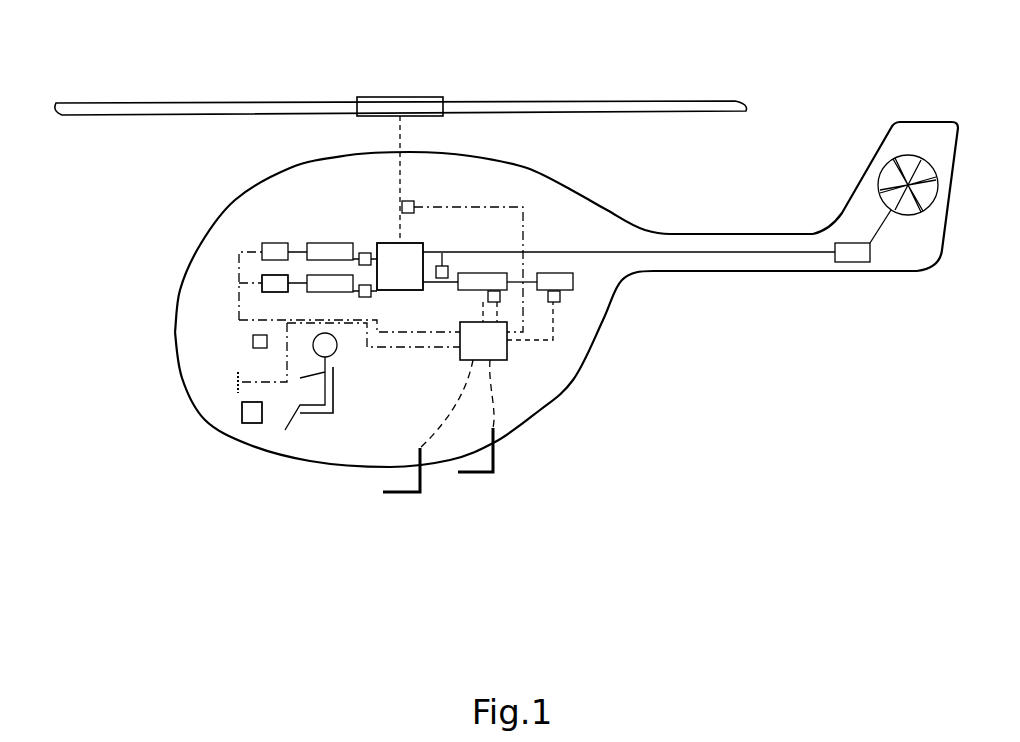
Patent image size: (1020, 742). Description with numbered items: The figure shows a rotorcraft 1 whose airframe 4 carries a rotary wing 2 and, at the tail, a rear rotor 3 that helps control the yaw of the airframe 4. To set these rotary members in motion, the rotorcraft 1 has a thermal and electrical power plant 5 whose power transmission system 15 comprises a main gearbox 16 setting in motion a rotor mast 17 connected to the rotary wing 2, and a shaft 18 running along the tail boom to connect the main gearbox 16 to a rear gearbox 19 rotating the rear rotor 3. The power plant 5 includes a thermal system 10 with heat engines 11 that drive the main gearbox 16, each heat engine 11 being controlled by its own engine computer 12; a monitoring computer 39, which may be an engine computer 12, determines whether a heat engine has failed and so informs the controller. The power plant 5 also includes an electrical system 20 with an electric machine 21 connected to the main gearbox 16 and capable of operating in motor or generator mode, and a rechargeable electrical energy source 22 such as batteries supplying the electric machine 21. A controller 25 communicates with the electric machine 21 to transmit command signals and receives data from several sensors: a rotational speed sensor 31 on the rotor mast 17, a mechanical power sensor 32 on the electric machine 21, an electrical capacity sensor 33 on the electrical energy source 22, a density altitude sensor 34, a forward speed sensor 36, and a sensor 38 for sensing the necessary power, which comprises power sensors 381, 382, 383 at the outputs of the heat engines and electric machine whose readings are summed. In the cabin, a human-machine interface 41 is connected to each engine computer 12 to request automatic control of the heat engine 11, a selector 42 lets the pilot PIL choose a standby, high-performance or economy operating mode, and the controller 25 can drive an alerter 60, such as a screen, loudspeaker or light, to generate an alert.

The rotorcraft 1 is at (168, 518).
The rotary wing 2 is at (593, 80).
The rear rotor 3 is at (892, 140).
The airframe 4 is at (222, 393).
The thermal and electrical power plant 5 is at (272, 217).
The thermal system 10 is at (222, 243).
The heat engine 11 is at (320, 243).
The engine computer 12 is at (273, 243).
The power transmission system 15 is at (383, 215).
The main gearbox 16 is at (400, 266).
The rotor mast 17 is at (400, 132).
The shaft 18 is at (720, 253).
The rear gearbox 19 is at (853, 262).
The electrical system 20 is at (415, 390).
The electric machine 21 is at (487, 272).
The electrical energy source 22 is at (565, 281).
The controller 25 is at (483, 341).
The rotational speed sensor 31 is at (412, 200).
The mechanical power sensor 32 is at (501, 300).
The electrical capacity sensor 33 is at (561, 296).
The density altitude sensor 34 is at (512, 456).
The forward speed sensor 36 is at (402, 504).
The sensor for sensing a necessary power 38 is at (357, 322).
The monitoring computer 39 is at (273, 292).
The human-machine interface 41 is at (253, 341).
The selector 42 is at (242, 412).
The alerter 60 is at (252, 423).
The power sensor 381 is at (372, 293).
The power sensor 382 is at (365, 252).
The power sensor 383 is at (443, 265).
The pilot PIL is at (290, 432).